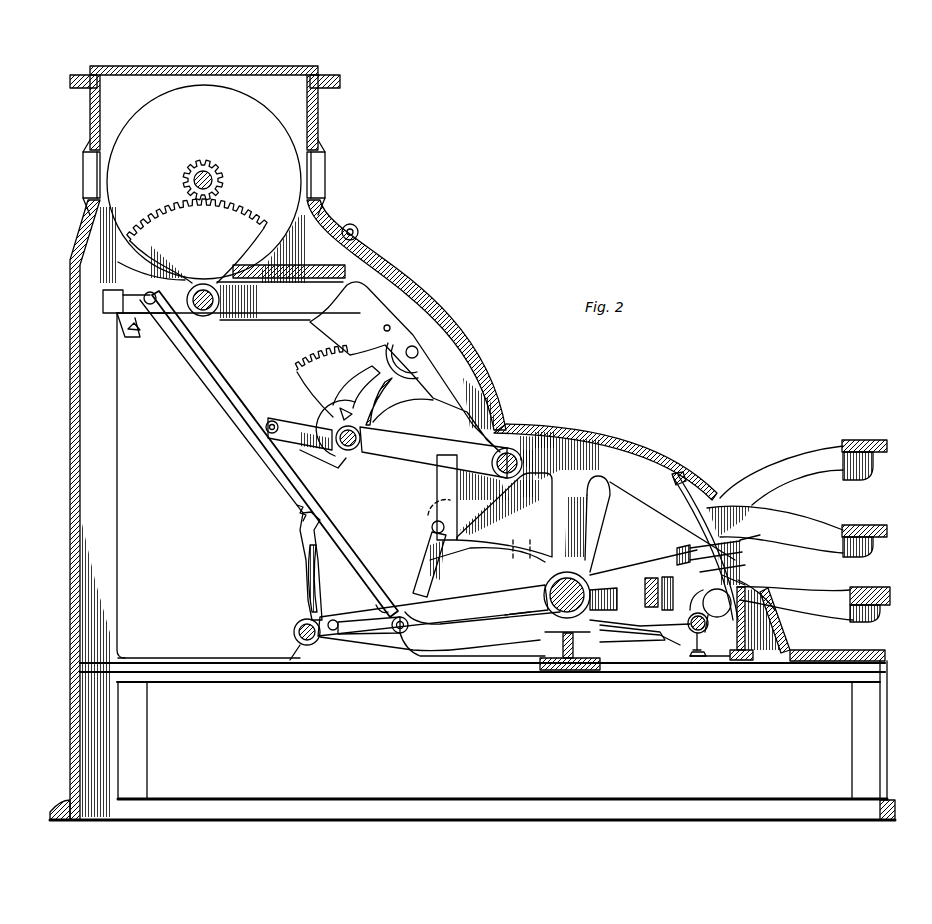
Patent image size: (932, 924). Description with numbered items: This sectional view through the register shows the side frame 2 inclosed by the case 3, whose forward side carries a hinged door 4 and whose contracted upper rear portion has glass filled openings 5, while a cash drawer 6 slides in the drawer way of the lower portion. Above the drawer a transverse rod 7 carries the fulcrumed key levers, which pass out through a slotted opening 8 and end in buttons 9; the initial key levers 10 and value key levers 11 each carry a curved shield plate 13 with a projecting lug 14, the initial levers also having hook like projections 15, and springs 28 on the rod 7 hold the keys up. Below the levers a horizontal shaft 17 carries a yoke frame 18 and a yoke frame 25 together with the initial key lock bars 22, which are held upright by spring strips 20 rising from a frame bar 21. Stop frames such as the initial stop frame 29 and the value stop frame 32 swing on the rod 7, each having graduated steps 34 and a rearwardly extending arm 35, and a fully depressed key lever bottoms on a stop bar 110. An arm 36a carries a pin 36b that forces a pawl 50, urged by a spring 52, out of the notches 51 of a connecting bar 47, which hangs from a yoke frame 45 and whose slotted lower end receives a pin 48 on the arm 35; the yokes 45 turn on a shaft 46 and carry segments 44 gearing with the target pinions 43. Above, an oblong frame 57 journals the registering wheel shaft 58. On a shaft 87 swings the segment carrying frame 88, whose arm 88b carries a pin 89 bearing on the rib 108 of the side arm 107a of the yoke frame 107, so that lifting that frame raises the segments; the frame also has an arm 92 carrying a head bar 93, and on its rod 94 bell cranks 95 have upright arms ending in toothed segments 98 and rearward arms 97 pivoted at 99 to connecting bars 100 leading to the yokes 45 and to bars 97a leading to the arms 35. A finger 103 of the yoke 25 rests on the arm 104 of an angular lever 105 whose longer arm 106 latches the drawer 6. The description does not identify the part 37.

The side frame 2 is at (117, 487).
The case 3 is at (70, 573).
The hinged door 4 is at (470, 336).
The glass filled openings 5 is at (83, 178).
The cash drawer 6 is at (840, 723).
The transverse rod 7 is at (598, 565).
The slotted opening 8 is at (770, 540).
The buttons or heads 9 is at (887, 445).
The initial key levers 10 is at (790, 456).
The value key levers 11 is at (815, 598).
The curved shield plate 13 is at (693, 480).
The projecting lug 14 is at (720, 560).
The upturned hook like projections 15 is at (515, 628).
The horizontal shaft 17 is at (702, 636).
The yoke frame 18 is at (720, 618).
The spring strips 20 is at (693, 652).
The horizontal frame bar 21 is at (696, 658).
The initial key lock bars 22 is at (676, 572).
The yoke frame 25 is at (750, 590).
The springs 28 is at (612, 560).
The initial stop frame 29 is at (655, 598).
The stop frame 32 is at (640, 640).
The graduated steps 34 is at (650, 577).
The rearwardly extending arm 35 is at (470, 612).
The rearwardly extending arm 36a is at (372, 628).
The laterally projecting pin 36b is at (325, 650).
The pinion 37 is at (215, 176).
The pinion wheel 43 is at (183, 178).
The segment 44 is at (160, 226).
The yoke like frames 45 is at (125, 333).
The shaft 46 is at (206, 315).
The connecting bar 47 is at (237, 418).
The screw or pin 48 is at (396, 632).
The pawl 50 is at (303, 576).
The notches 51 is at (300, 511).
The spring 52 is at (305, 600).
The oblong frame 57 is at (440, 377).
The registering wheel carrying shaft 58 is at (418, 352).
The shaft 87 is at (549, 435).
The rearwardly extending frame 88 is at (457, 463).
The downwardly extending arm 88b is at (440, 486).
The inwardly projecting pin 89 is at (432, 529).
The arm extension 92 is at (330, 400).
The horizontal head bar 93 is at (392, 395).
The fixed horizontal rod 94 is at (348, 450).
The bell cranks 95 is at (340, 413).
The rearwardly projected arm 97 is at (296, 458).
The bar 97a is at (333, 482).
The toothed wheel segment 98 is at (297, 364).
The pivotal connection 99 is at (268, 429).
The connecting bar 100 is at (237, 383).
The rearward extension or finger 103 is at (662, 632).
The arm 104 is at (625, 636).
The angular lever 105 is at (525, 625).
The longer arm 106 is at (470, 630).
The yoke frame 107 is at (590, 545).
The side arm 107a is at (484, 542).
The shoulder or rib 108 is at (435, 548).
The stop bar 110 is at (744, 640).